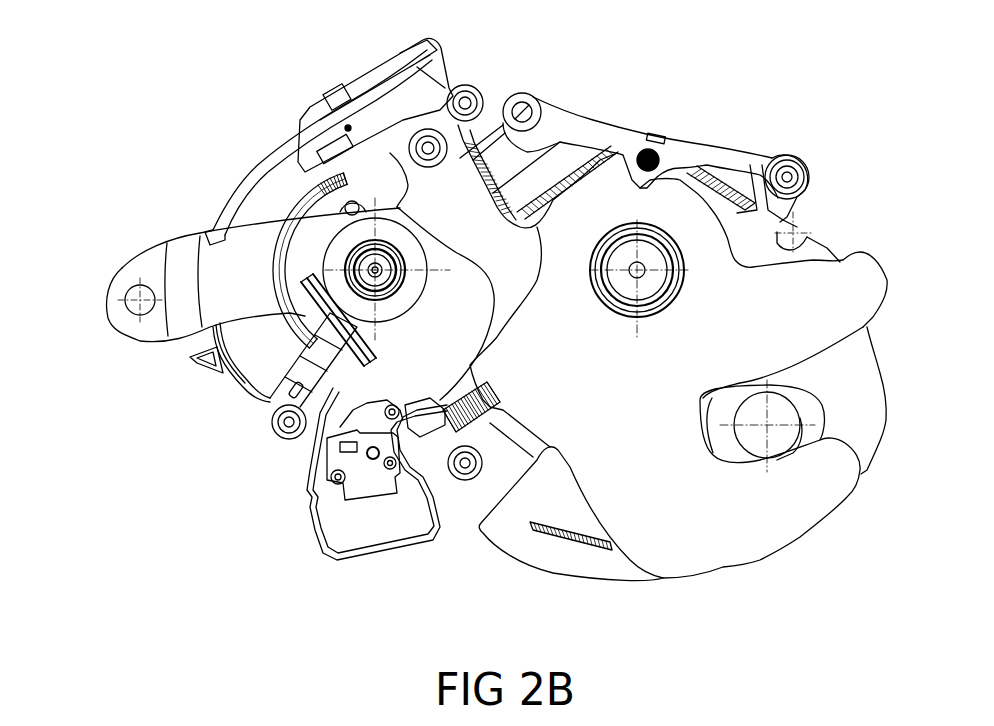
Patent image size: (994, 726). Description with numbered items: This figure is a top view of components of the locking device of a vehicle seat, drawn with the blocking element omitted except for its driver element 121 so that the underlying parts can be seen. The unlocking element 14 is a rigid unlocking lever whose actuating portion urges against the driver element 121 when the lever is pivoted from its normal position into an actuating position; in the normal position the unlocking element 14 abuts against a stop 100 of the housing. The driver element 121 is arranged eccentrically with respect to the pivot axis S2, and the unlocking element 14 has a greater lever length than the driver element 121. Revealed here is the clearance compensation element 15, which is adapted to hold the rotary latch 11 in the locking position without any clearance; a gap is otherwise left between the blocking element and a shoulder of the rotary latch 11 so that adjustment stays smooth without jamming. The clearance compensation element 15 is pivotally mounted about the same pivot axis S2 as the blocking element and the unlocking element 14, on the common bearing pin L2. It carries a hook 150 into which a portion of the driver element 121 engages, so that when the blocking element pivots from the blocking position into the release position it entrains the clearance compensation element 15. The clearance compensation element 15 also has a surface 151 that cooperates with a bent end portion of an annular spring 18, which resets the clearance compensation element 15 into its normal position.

The rotary latch 11 is at (720, 536).
The unlocking element 14 is at (210, 275).
The clearance compensation element 15 is at (473, 288).
The annular spring 18 is at (330, 313).
The stop 100 is at (180, 340).
The driver element 121 is at (349, 202).
The hook 150 is at (308, 197).
The surface 151 is at (340, 355).
The pivot axis S2 is at (342, 268).
The bearing pin L2 is at (379, 282).